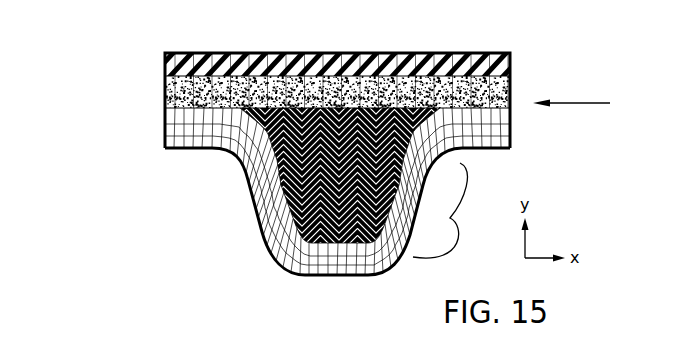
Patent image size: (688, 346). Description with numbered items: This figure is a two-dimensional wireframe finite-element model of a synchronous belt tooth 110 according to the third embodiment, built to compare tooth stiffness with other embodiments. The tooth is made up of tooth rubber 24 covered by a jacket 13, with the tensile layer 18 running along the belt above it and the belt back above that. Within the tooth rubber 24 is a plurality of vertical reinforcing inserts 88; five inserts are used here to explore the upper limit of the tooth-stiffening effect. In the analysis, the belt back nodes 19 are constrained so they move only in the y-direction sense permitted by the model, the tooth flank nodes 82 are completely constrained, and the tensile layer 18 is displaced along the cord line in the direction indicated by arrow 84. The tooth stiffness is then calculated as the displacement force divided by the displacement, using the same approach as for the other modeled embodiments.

The belt tooth 110 is at (115, 57).
The belt back nodes 19 is at (349, 68).
The tensile layer 18 is at (163, 97).
The jacket 13 is at (190, 135).
The tooth rubber 24 is at (248, 187).
The vertical reinforcing inserts 88 is at (368, 236).
The tooth flank nodes 82 is at (448, 210).
The arrow 84 is at (585, 103).